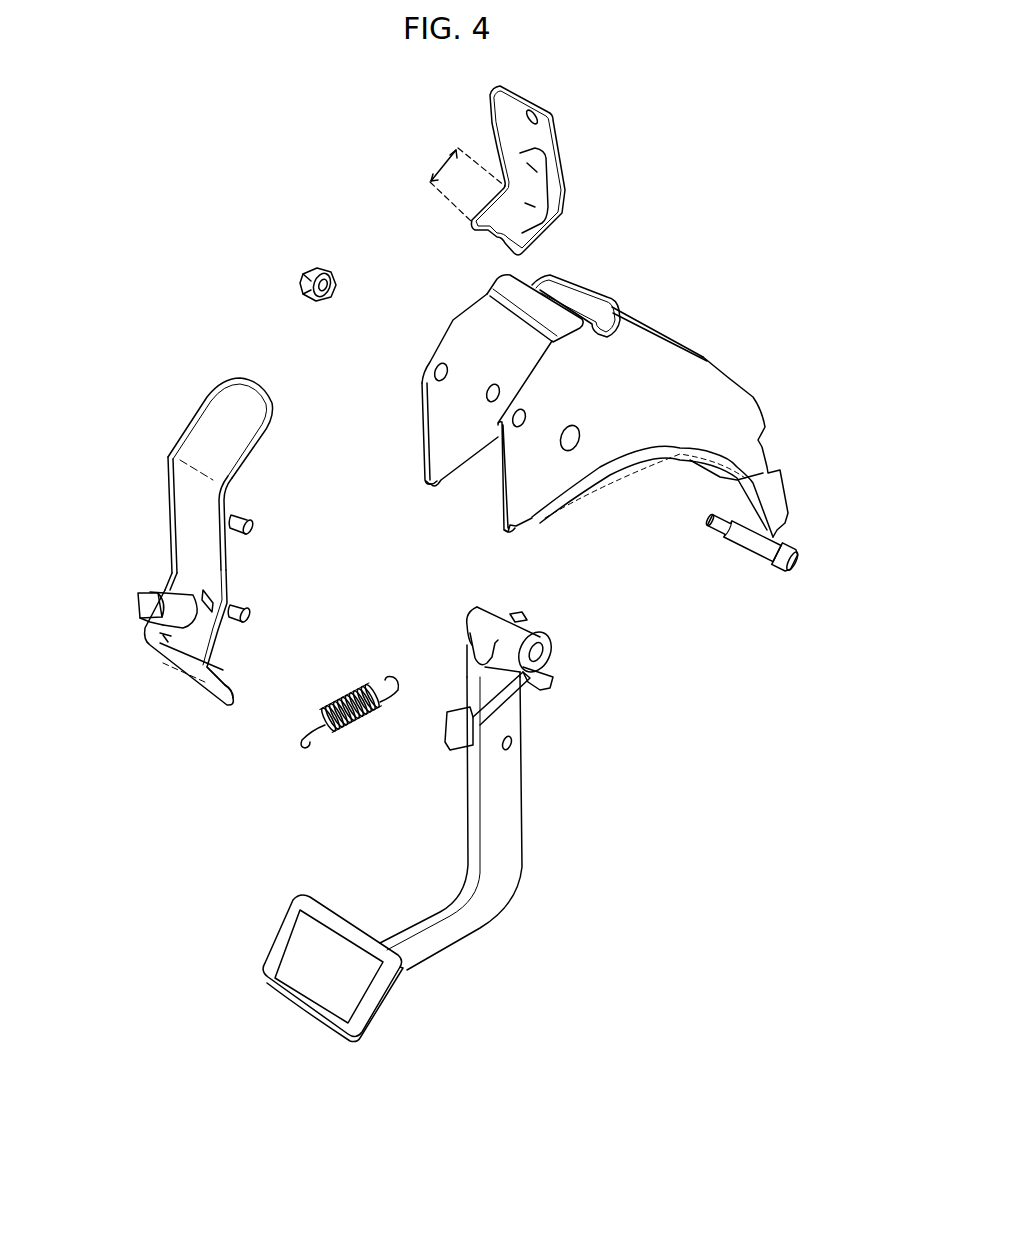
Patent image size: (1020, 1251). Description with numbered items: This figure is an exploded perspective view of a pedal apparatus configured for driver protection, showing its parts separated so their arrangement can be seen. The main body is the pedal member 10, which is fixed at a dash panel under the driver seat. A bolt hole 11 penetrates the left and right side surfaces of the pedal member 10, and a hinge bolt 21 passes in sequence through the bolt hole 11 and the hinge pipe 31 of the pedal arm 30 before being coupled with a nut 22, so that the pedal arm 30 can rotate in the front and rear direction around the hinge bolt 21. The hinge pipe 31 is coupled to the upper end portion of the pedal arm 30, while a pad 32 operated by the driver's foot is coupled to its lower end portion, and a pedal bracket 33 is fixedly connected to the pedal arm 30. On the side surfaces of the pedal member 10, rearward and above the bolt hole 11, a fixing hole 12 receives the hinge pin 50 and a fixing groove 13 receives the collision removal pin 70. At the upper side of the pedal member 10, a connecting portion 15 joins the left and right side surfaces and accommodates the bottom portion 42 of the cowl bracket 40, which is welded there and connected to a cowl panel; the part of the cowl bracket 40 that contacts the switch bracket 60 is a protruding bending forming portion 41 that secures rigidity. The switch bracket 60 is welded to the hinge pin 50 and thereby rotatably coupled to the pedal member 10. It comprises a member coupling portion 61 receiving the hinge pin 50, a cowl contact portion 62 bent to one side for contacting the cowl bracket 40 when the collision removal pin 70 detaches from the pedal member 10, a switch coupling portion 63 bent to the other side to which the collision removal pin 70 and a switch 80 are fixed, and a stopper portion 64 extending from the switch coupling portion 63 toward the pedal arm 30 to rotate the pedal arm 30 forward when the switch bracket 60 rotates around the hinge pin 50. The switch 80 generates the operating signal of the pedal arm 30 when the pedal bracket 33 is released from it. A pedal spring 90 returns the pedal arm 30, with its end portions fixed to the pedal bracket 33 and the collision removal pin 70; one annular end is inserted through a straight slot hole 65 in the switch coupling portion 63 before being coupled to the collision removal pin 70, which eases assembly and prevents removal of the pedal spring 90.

The pedal member 10 is at (650, 330).
The bolt hole 11 is at (490, 390).
The fixing hole 12 is at (436, 372).
The fixing groove 13 is at (432, 489).
The connecting portion 15 is at (492, 285).
The hinge bolt 21 is at (753, 548).
The nut 22 is at (300, 283).
The pedal arm 30 is at (427, 840).
The hinge pipe 31 is at (478, 615).
The pad 32 is at (300, 985).
The pedal bracket 33 is at (510, 718).
The cowl bracket 40 is at (555, 150).
The bending forming portion 41 is at (535, 187).
The bottom portion 42 is at (458, 185).
The hinge pin 50 is at (253, 528).
The switch bracket 60 is at (185, 567).
The member coupling portion 61 is at (190, 502).
The cowl contact portion 62 is at (213, 425).
The switch coupling portion 63 is at (197, 637).
The stopper portion 64 is at (220, 690).
The slot hole 65 is at (205, 600).
The collision removal pin 70 is at (250, 616).
The switch 80 is at (138, 604).
The pedal spring 90 is at (348, 700).